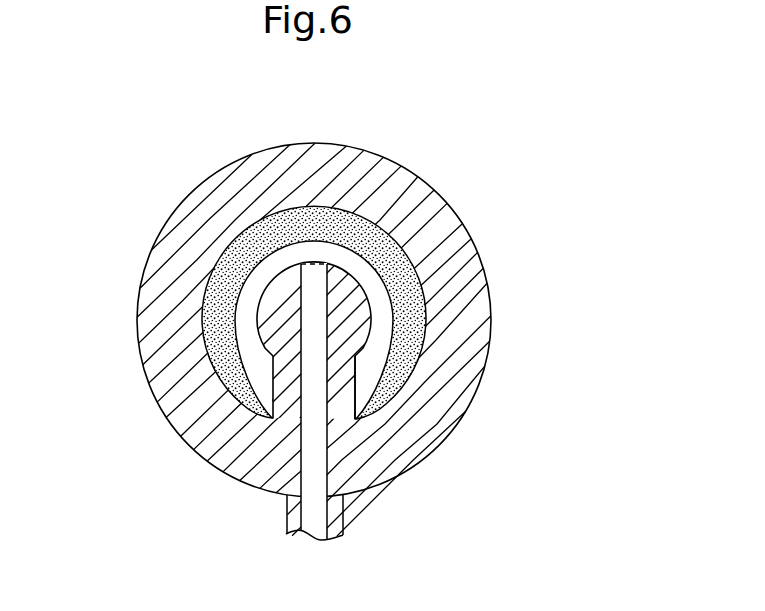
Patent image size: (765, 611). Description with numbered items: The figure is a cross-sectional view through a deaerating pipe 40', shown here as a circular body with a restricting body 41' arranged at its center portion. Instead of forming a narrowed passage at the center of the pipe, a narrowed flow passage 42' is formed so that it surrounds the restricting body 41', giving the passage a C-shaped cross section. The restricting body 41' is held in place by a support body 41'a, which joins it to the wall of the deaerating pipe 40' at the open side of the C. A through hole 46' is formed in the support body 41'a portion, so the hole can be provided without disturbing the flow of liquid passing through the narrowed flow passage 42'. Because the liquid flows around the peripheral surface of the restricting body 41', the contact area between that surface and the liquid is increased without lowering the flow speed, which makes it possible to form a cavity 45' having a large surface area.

The deaerating pipe 40' is at (280, 322).
The restricting body 41' is at (444, 344).
The support body 41'a is at (438, 435).
The narrowed flow passage 42' is at (421, 372).
The cavity 45' is at (421, 312).
The through hole 46' is at (384, 414).